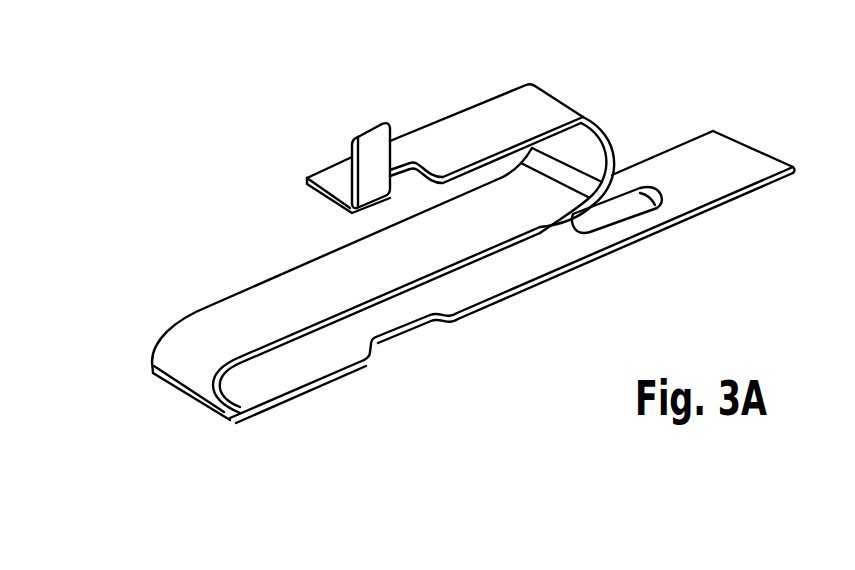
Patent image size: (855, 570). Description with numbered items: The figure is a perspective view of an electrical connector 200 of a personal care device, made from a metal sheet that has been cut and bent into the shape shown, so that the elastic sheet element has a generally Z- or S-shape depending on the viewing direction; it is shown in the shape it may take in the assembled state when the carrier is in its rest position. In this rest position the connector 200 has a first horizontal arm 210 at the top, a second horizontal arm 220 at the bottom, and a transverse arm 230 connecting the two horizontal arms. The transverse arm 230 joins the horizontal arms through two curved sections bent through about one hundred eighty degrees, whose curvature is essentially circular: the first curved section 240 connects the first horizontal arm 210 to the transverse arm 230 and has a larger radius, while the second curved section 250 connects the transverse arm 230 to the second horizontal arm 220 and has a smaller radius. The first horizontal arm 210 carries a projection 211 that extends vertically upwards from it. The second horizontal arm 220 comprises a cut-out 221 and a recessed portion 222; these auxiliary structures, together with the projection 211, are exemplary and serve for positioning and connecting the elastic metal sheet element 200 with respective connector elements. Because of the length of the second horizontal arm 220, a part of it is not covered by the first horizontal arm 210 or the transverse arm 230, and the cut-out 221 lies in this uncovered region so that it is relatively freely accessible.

The electrical connector 200 is at (253, 141).
The first horizontal arm 210 is at (508, 103).
The projection 211 is at (373, 147).
The second horizontal arm 220 is at (460, 300).
The cut-out 221 is at (610, 215).
The recessed portion 222 is at (386, 337).
The transverse arm 230 is at (247, 307).
The first curved section 240 is at (613, 141).
The second curved section 250 is at (163, 359).